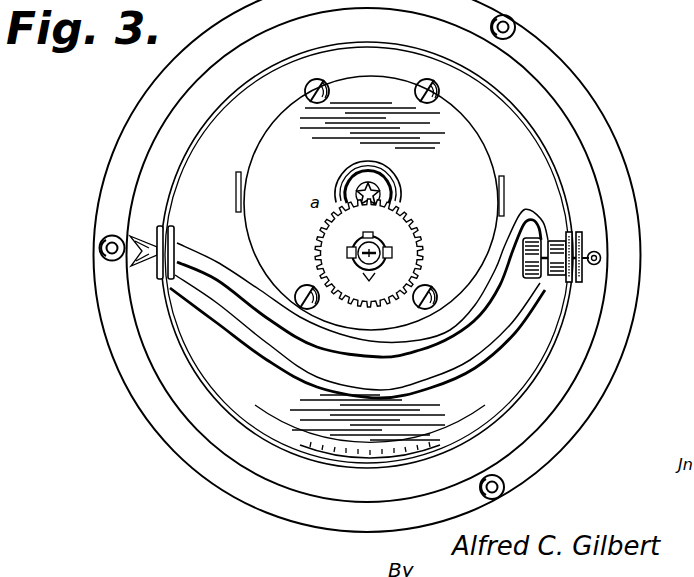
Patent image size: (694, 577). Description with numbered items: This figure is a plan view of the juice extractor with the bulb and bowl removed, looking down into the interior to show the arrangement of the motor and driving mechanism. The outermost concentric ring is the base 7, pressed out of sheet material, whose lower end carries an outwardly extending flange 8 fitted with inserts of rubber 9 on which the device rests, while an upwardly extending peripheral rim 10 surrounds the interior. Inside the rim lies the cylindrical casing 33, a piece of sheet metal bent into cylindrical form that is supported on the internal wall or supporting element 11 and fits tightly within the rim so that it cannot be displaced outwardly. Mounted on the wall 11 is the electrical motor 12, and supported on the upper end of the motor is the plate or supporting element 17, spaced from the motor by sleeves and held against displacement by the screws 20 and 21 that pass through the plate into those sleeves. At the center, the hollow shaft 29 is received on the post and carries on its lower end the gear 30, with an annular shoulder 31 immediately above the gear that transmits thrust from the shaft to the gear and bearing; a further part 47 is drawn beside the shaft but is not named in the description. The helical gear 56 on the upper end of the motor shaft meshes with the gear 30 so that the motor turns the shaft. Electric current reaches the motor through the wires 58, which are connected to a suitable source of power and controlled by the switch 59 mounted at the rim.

The base 7 is at (577, 173).
The outwardly extending flange 8 is at (553, 67).
The inserts of rubber 9 is at (517, 27).
The peripheral rim 10 is at (572, 210).
The internal wall or supporting element 11 is at (496, 396).
The electrical motor 12 is at (347, 187).
The plate or supporting element 17 is at (258, 151).
The screw 20 is at (303, 290).
The screw 21 is at (304, 101).
The shaft 29 is at (350, 252).
The gear 30 is at (396, 218).
The annular shoulder 31 is at (392, 241).
The cylindrical casing 33 is at (364, 236).
The bearing block 47 is at (392, 253).
The helical gear 56 is at (383, 186).
The wires 58 is at (157, 262).
The switch 59 is at (600, 258).